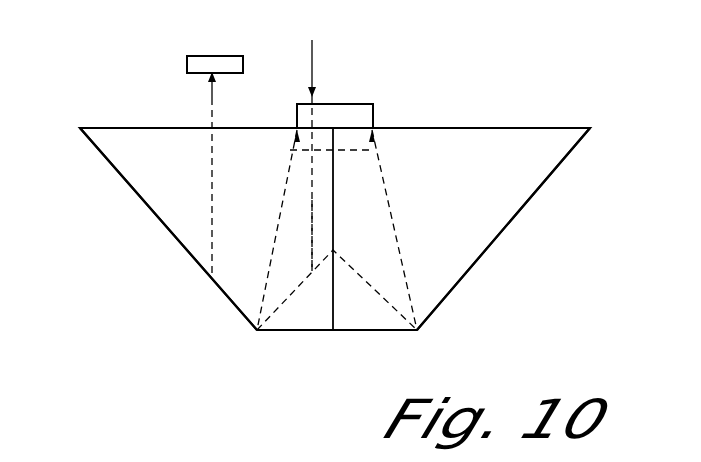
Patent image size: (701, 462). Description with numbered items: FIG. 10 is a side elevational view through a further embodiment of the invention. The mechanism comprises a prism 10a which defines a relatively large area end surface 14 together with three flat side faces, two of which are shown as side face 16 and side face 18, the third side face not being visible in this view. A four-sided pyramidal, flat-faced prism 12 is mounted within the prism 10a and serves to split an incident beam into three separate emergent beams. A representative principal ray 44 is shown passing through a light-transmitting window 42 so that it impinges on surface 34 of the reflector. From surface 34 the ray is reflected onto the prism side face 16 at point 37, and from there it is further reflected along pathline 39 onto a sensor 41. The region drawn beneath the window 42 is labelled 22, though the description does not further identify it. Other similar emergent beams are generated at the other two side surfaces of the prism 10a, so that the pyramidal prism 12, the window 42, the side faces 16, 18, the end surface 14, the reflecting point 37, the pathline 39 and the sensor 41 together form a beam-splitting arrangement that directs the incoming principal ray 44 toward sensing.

The prism 10a is at (510, 230).
The four-sided pyramidal flat-faced prism 12 is at (357, 278).
The end surface 14 is at (485, 128).
The side face 16 is at (165, 208).
The side face 18 is at (540, 168).
The entry window region 22 is at (373, 160).
The surface of the reflector 34 is at (312, 272).
The point 37 is at (312, 273).
The pathline 39 is at (212, 100).
The sensor 41 is at (195, 62).
The light-transmitting window 42 is at (362, 113).
The principal ray 44 is at (312, 70).